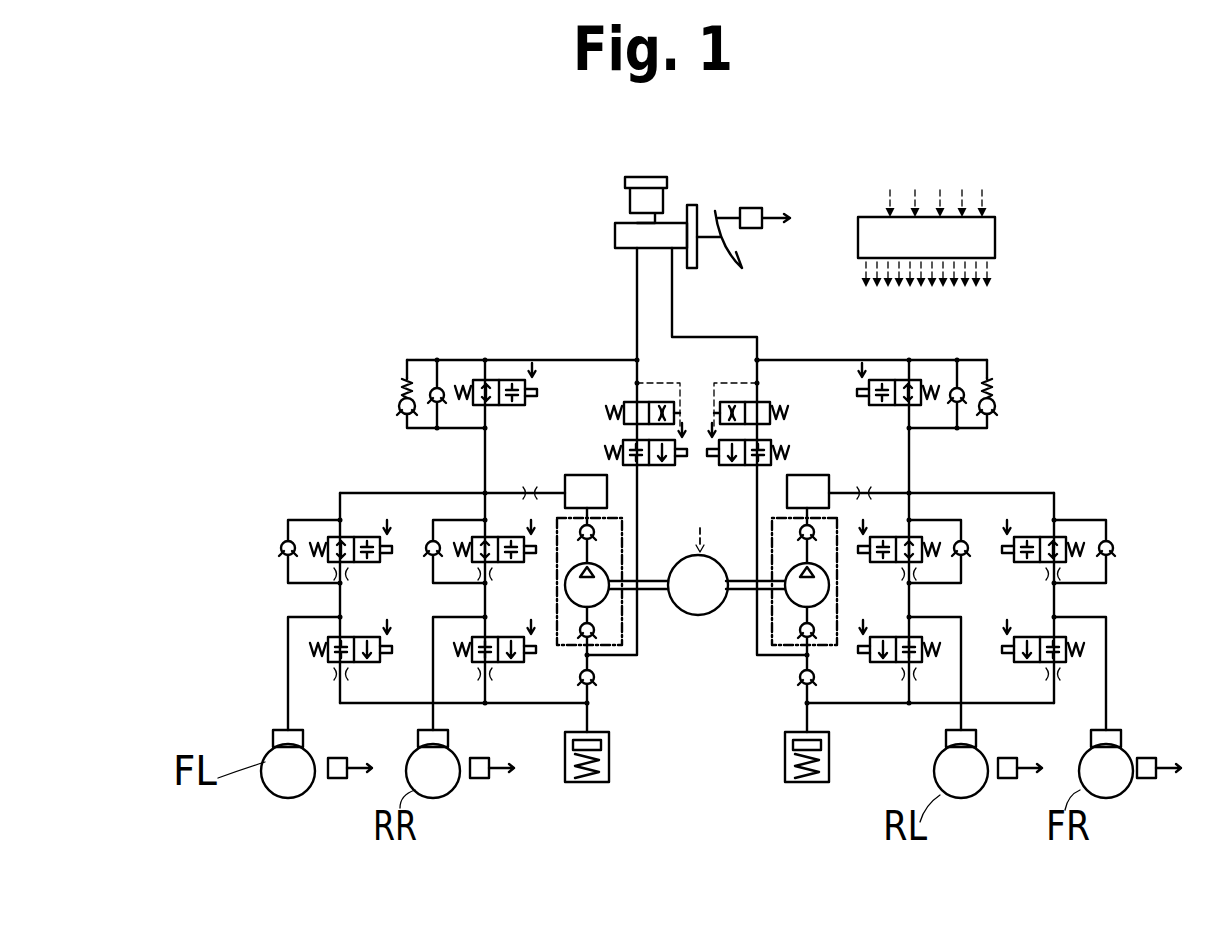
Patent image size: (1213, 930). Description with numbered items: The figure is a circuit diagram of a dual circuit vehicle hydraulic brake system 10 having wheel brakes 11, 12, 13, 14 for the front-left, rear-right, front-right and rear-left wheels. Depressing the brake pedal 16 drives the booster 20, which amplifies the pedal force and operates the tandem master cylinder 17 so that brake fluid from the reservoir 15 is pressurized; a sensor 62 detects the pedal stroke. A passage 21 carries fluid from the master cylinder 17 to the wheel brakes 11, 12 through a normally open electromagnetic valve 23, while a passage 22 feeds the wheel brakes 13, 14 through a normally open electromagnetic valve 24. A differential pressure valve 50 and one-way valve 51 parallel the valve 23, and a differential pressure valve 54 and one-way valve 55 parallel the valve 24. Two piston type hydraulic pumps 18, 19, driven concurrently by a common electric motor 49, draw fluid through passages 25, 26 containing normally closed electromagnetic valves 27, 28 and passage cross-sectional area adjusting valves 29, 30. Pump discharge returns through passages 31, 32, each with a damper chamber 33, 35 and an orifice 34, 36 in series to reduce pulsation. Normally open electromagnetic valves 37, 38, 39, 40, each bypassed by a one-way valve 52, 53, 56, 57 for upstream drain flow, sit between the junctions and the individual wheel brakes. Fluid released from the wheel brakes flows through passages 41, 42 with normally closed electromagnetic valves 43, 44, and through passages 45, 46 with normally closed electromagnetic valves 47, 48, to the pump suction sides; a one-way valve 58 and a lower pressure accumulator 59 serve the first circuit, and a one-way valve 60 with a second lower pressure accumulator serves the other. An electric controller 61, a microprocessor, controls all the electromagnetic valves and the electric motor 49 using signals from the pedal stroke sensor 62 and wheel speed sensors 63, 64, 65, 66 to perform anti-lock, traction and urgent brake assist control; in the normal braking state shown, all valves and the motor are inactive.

The hydraulic brake system 10 is at (487, 254).
The wheel brake 11 is at (274, 742).
The wheel brake 12 is at (448, 742).
The wheel brake 13 is at (1120, 742).
The wheel brake 14 is at (945, 742).
The reservoir 15 is at (620, 200).
The brake pedal 16 is at (740, 258).
The tandem master cylinder 17 is at (615, 238).
The hydraulic pump 18 is at (622, 628).
The hydraulic pump 19 is at (840, 598).
The booster 20 is at (694, 214).
The passage 21 is at (572, 358).
The passage 22 is at (800, 358).
The electromagnetic valve 23 is at (510, 378).
The electromagnetic valve 24 is at (892, 380).
The passage 25 is at (640, 540).
The passage 26 is at (756, 495).
The electromagnetic valve 27 is at (686, 462).
The electromagnetic valve 28 is at (772, 445).
The passage cross-sectional area adjusting valve 29 is at (622, 410).
The passage cross-sectional area adjusting valve 30 is at (760, 400).
The passage 31 is at (508, 490).
The passage 32 is at (885, 492).
The damper chamber 33 is at (590, 474).
The orifice 34 is at (533, 486).
The damper chamber 35 is at (812, 474).
The orifice 36 is at (864, 486).
The electromagnetic valve 37 is at (350, 535).
The electromagnetic valve 38 is at (496, 535).
The electromagnetic valve 39 is at (1036, 535).
The electromagnetic valve 40 is at (912, 542).
The passage 41 is at (398, 702).
The passage 42 is at (490, 702).
The electromagnetic valve 43 is at (360, 636).
The electromagnetic valve 44 is at (505, 636).
The passage 45 is at (1012, 704).
The passage 46 is at (882, 704).
The electromagnetic valve 47 is at (1068, 650).
The electromagnetic valve 48 is at (866, 665).
The electric motor 49 is at (700, 616).
The differential pressure valve 50 is at (398, 405).
The one-way valve 51 is at (435, 388).
The one-way valve 52 is at (280, 550).
The one-way valve 53 is at (430, 540).
The differential pressure valve 54 is at (996, 405).
The one-way valve 55 is at (955, 388).
The one-way valve 56 is at (1114, 550).
The one-way valve 57 is at (966, 556).
The one-way valve 58 is at (598, 682).
The lower pressure accumulator 59 is at (597, 784).
The one-way valve 60 is at (797, 682).
The electric controller 61 is at (995, 237).
The sensor 62 is at (757, 210).
The sensor 63 is at (340, 780).
The sensor 64 is at (482, 780).
The sensor 65 is at (1148, 780).
The sensor 66 is at (1010, 780).